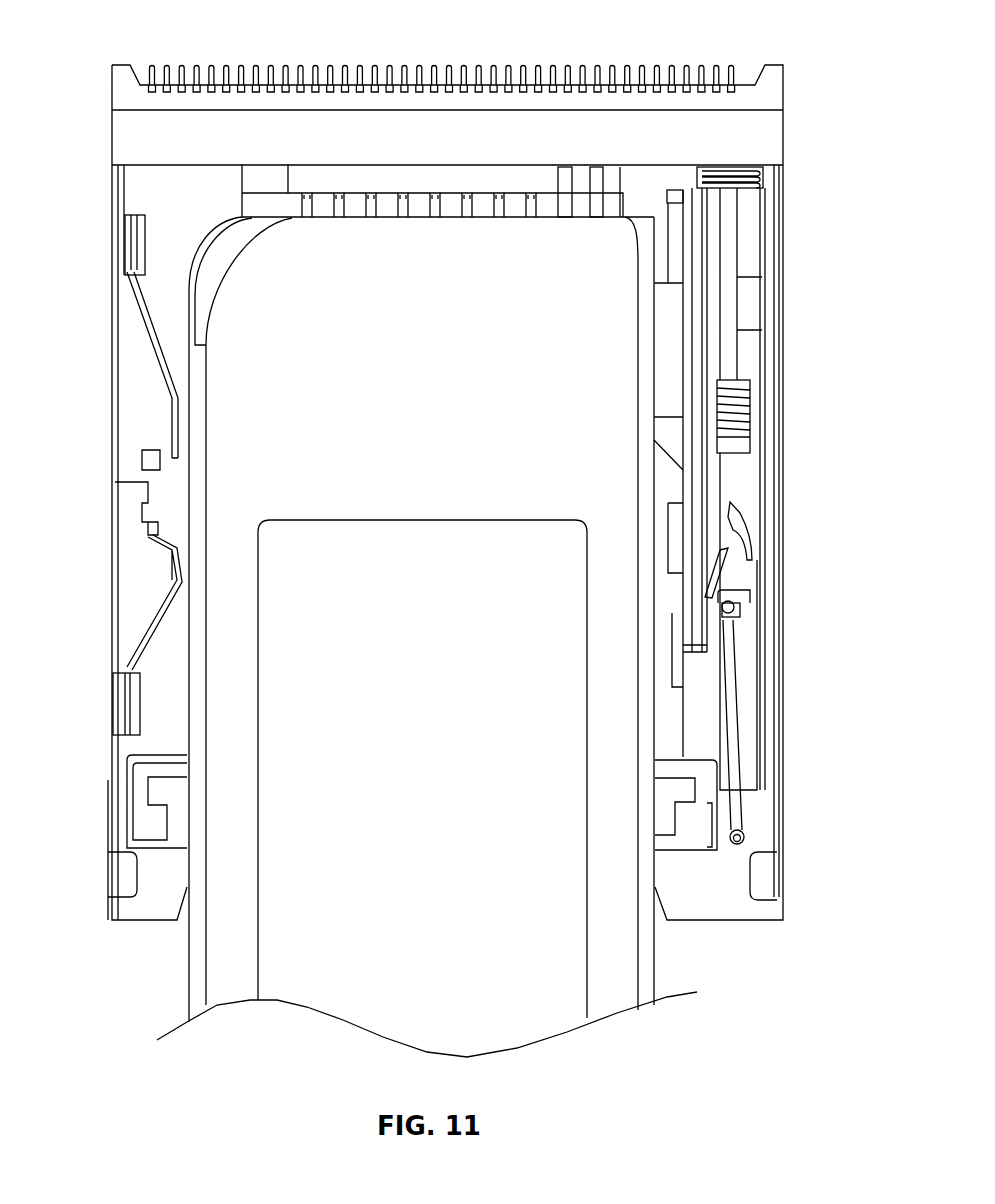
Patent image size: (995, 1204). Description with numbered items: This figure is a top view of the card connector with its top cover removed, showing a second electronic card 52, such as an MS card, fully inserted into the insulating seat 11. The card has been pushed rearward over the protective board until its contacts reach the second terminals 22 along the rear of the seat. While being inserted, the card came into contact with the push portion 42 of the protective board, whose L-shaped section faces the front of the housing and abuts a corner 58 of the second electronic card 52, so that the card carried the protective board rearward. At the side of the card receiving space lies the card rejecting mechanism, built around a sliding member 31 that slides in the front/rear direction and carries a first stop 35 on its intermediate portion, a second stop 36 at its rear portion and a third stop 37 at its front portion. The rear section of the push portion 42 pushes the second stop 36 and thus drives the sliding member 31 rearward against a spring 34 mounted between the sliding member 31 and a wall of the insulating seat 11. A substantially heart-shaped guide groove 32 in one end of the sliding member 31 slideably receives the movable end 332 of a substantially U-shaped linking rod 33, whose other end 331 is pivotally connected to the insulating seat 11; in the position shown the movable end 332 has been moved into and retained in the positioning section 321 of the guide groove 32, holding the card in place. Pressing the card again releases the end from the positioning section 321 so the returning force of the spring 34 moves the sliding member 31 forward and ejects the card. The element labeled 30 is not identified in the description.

The insulating seat 11 is at (140, 138).
The second terminals 22 is at (310, 207).
The corner of the second electronic card 58 is at (640, 233).
The second electronic card 52 is at (543, 975).
The second stop 36 is at (677, 197).
The spring 34 is at (753, 170).
The push portion 42 is at (667, 232).
The sliding member 31 is at (713, 253).
The actuating rod 30 is at (737, 317).
The first stop 35 is at (672, 437).
The guide groove 32 is at (750, 542).
The positioning section 321 is at (747, 593).
The movable end of the linking rod 332 is at (743, 610).
The third stop 37 is at (688, 650).
The linking rod 33 is at (735, 752).
The other end of the linking rod 331 is at (745, 840).